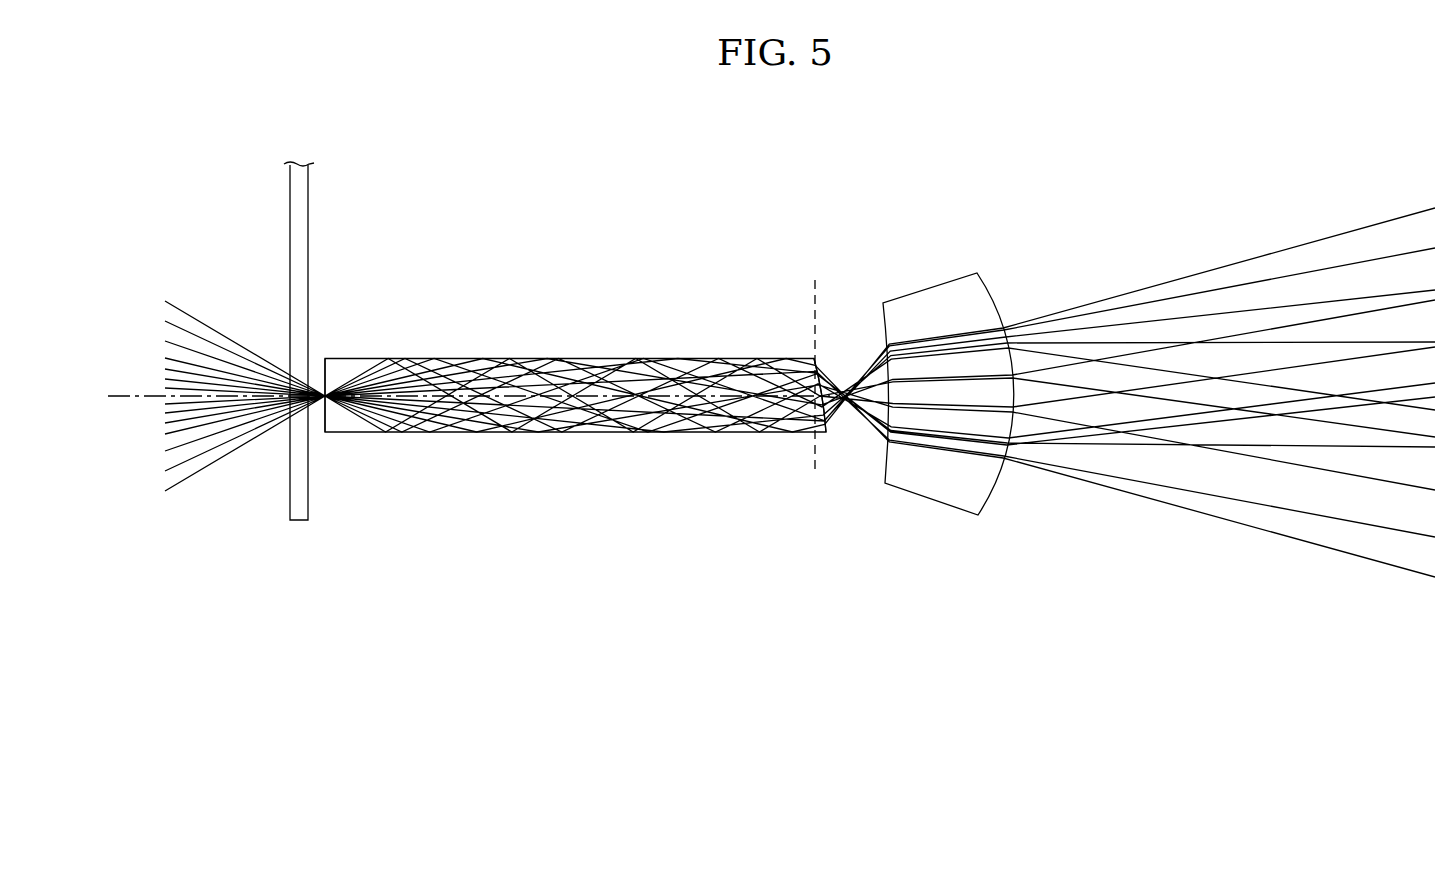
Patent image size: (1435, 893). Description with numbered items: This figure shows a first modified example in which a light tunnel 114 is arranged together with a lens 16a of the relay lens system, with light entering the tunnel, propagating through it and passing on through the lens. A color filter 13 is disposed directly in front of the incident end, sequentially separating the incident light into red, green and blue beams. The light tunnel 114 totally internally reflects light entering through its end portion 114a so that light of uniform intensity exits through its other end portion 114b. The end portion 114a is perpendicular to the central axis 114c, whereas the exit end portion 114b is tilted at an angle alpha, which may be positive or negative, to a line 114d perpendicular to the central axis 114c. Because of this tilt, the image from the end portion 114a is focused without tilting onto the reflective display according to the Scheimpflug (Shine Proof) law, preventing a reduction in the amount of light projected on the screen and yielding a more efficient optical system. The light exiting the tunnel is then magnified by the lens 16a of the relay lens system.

The color filter 13 is at (308, 260).
The light tunnel 114 is at (577, 463).
The end portion (incident end) 114a is at (322, 428).
The end portion (exit end) 114b is at (837, 430).
The central axis 114c is at (133, 396).
The line perpendicular to central axis 114d is at (813, 287).
The lens 16a is at (933, 307).